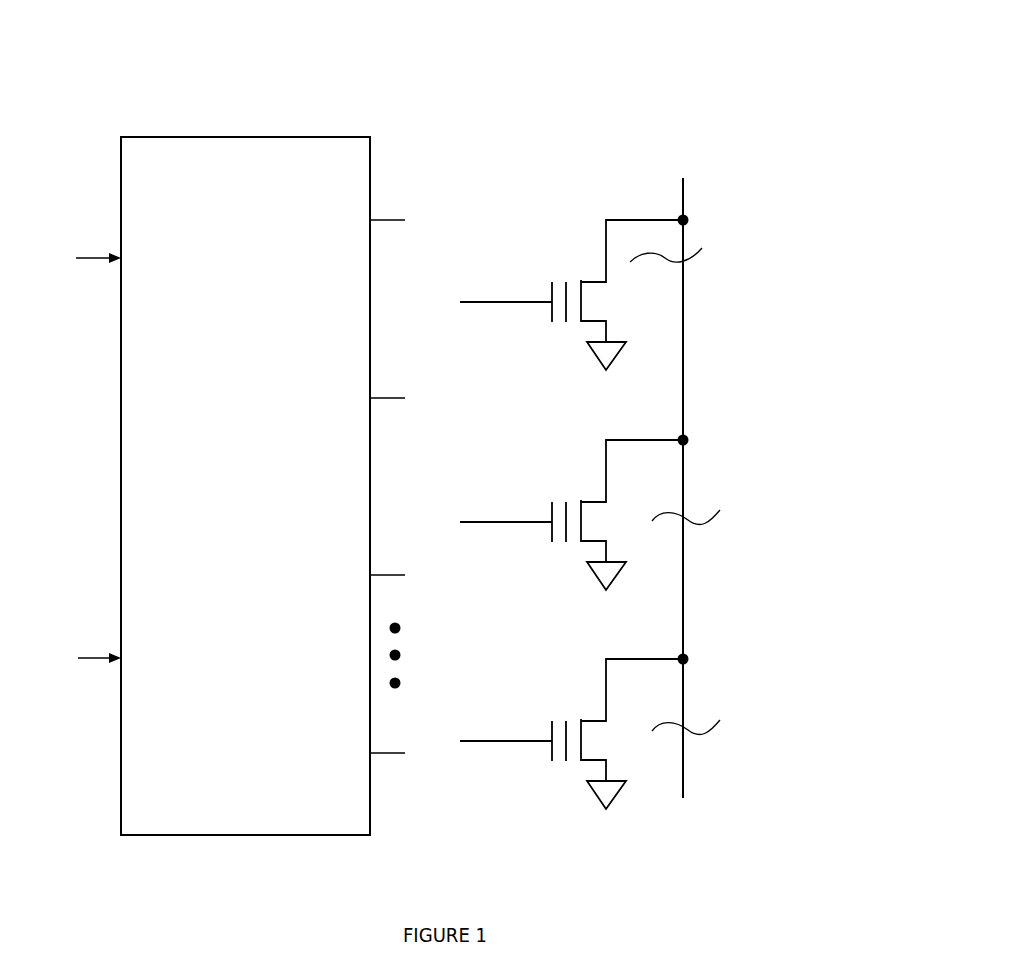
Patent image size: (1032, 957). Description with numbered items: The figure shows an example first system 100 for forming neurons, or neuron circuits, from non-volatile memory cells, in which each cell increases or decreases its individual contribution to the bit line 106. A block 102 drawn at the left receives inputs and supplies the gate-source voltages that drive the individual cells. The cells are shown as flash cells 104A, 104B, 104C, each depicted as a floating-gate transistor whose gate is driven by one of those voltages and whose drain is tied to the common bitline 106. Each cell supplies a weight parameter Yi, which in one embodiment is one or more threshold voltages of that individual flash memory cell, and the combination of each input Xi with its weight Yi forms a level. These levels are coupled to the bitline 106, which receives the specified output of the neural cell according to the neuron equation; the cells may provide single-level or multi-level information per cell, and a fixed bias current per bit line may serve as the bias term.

The first system 100 is at (477, 487).
The voltage generator block 102 is at (246, 135).
The flash cell 104A is at (624, 213).
The flash cell 104B is at (624, 433).
The flash cell 104C is at (624, 652).
The bit line 106 is at (687, 190).